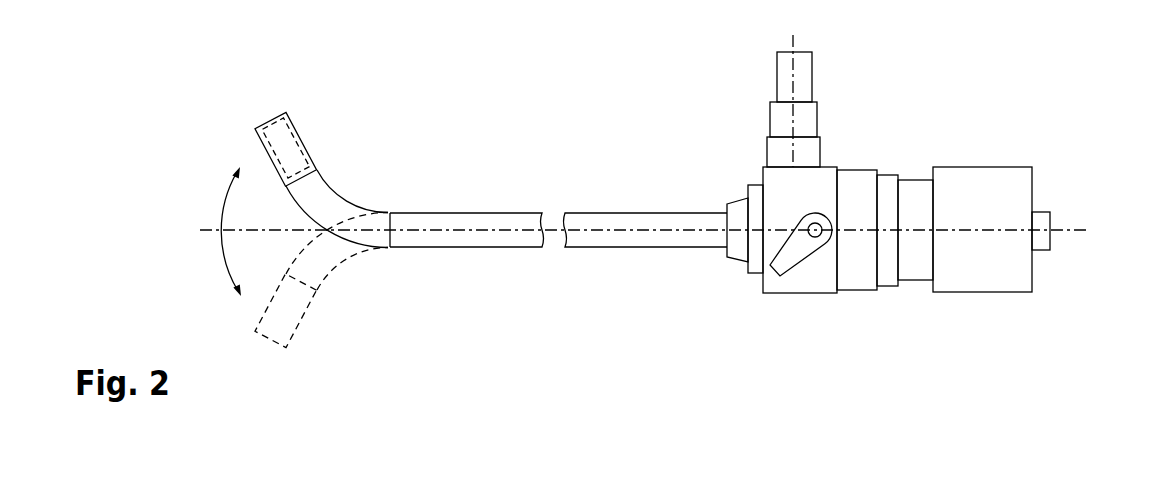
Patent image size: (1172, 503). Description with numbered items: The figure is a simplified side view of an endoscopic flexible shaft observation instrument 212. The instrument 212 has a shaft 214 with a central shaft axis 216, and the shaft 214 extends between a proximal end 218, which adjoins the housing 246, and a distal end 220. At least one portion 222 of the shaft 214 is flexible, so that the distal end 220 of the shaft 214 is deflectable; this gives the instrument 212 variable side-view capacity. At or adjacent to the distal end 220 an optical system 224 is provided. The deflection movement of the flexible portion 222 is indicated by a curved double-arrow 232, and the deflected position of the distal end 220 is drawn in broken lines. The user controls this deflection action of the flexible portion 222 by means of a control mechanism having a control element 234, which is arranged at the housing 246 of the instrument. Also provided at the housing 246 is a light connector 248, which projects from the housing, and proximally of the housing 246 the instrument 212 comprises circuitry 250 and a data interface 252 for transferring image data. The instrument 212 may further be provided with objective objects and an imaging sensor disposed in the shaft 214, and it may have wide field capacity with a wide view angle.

The flexible shaft observation instrument 212 is at (649, 150).
The shaft 214 is at (612, 247).
The central shaft axis 216 is at (502, 213).
The proximal end 218 is at (700, 212).
The distal end 220 is at (267, 155).
The flexible portion 222 is at (337, 187).
The optical system 224 is at (303, 131).
The curved double-arrow 232 is at (225, 263).
The control element 234 is at (800, 250).
The housing 246 is at (832, 167).
The light connector 248 is at (815, 75).
The circuitry 250 is at (993, 167).
The data interface 252 is at (1050, 222).